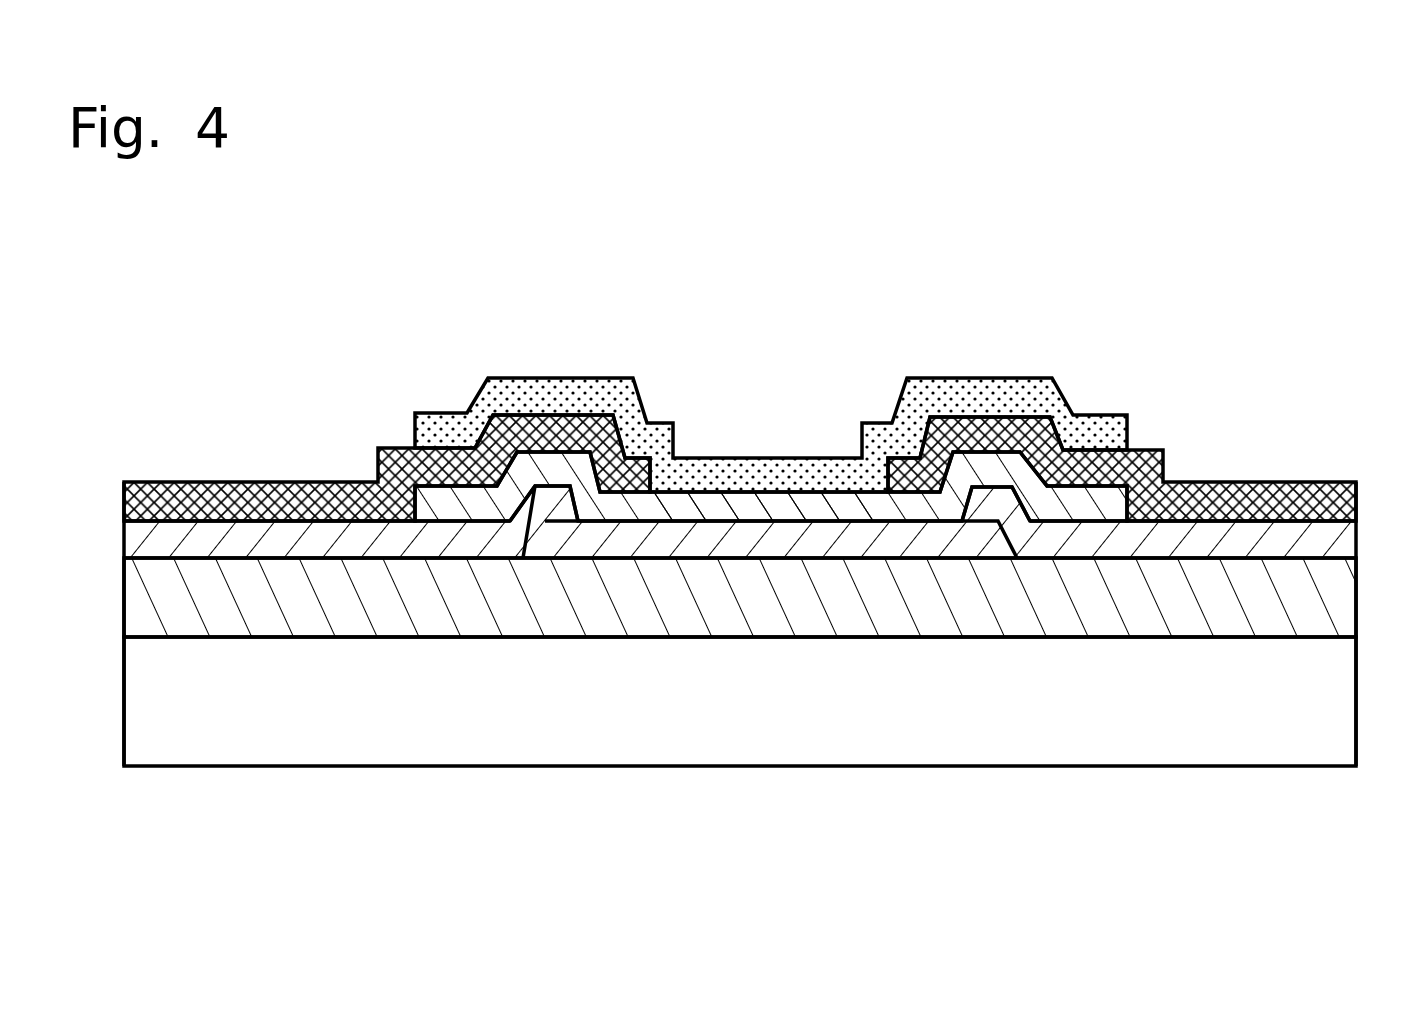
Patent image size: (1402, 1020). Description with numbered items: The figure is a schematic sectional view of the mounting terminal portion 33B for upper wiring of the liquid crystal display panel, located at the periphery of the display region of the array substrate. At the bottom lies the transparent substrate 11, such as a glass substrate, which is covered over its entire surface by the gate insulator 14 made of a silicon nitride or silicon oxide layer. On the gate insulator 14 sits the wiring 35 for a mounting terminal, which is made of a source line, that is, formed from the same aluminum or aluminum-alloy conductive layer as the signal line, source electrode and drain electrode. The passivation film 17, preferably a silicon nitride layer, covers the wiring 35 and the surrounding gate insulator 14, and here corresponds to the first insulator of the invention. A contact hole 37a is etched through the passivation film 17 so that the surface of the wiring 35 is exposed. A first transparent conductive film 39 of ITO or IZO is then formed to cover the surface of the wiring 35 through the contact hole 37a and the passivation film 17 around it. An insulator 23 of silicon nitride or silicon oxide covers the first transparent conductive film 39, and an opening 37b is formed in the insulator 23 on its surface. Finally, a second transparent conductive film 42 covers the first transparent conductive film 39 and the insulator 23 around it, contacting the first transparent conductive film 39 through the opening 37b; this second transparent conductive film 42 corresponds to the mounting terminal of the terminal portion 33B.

The transparent substrate 11 is at (1262, 740).
The gate insulator 14 is at (1150, 605).
The passivation film 17 is at (188, 538).
The insulator 23 is at (288, 500).
The mounting terminal portion for upper wiring 33B is at (223, 288).
The wiring for a mounting terminal 35 is at (683, 538).
The contact hole 37a is at (721, 512).
The opening 37b is at (789, 485).
The first transparent conductive film 39 is at (890, 512).
The second transparent conductive film 42 is at (497, 400).